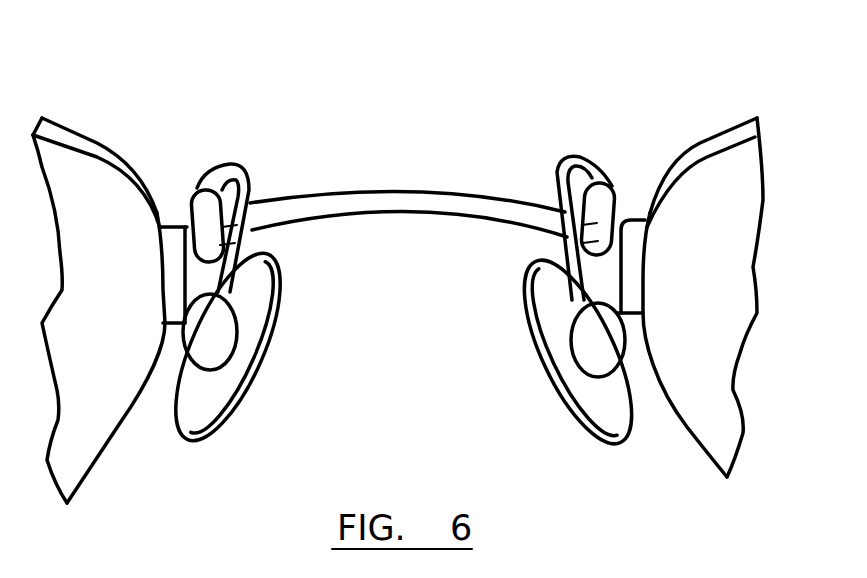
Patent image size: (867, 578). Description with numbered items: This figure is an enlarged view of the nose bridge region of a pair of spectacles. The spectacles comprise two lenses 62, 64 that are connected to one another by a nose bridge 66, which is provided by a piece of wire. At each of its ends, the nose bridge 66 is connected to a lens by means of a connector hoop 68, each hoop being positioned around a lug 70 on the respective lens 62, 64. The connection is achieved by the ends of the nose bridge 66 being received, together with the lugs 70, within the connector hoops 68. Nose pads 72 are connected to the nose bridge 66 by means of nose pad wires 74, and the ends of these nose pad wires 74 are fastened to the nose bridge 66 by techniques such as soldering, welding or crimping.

The lens 62 is at (75, 197).
The lens 64 is at (710, 207).
The nose bridge 66 is at (397, 203).
The connector hoop 68 is at (177, 243).
The lug 70 is at (205, 278).
The nose pad 72 is at (257, 358).
The nose pad wire 74 is at (243, 180).